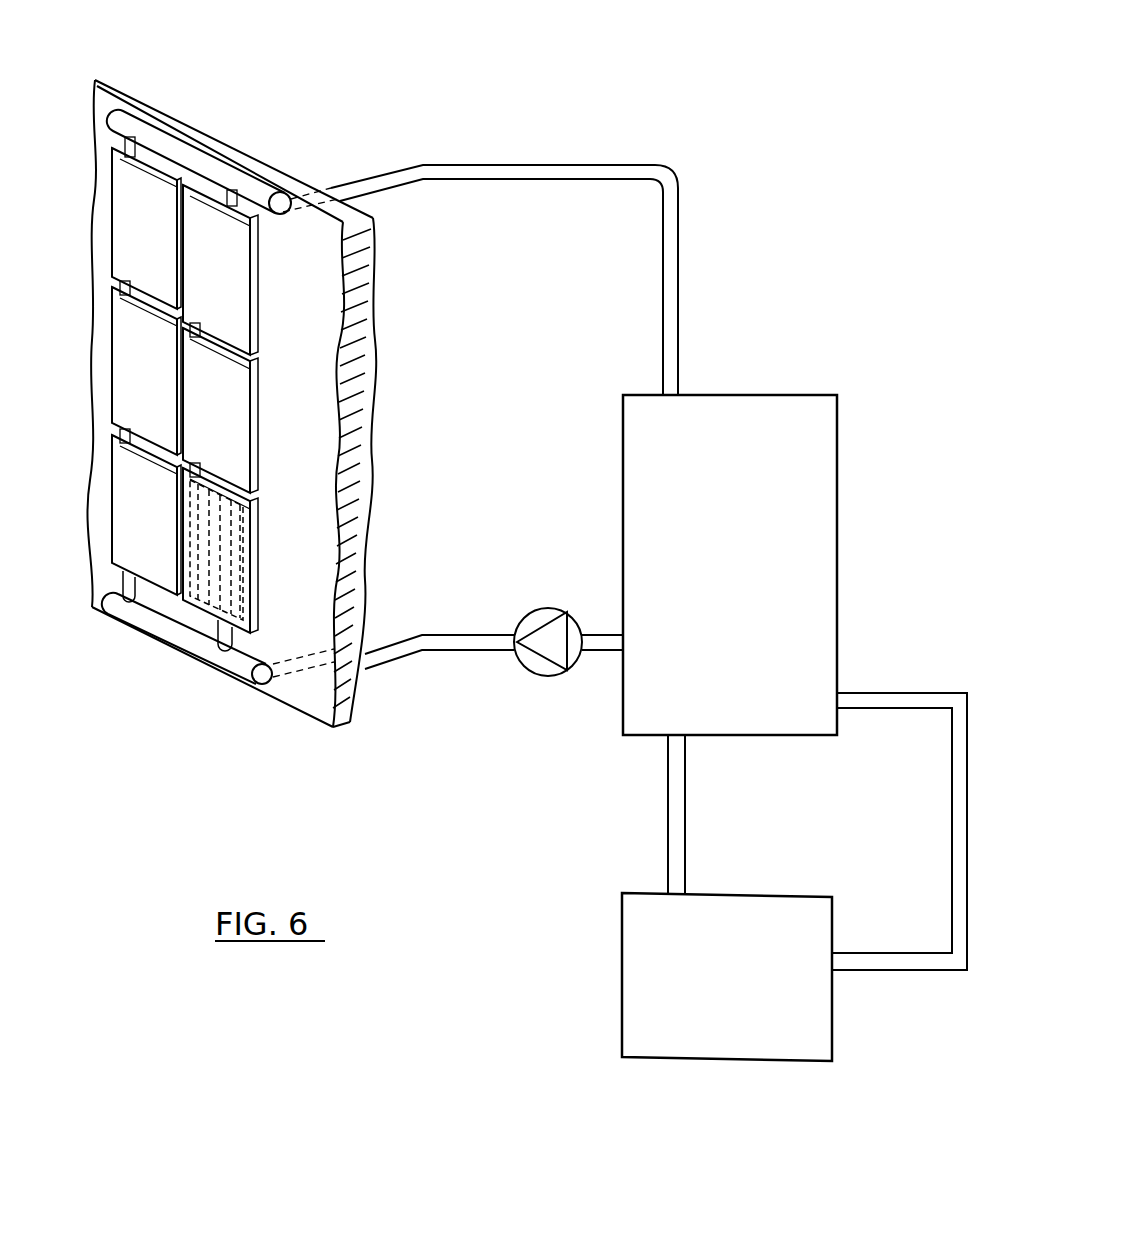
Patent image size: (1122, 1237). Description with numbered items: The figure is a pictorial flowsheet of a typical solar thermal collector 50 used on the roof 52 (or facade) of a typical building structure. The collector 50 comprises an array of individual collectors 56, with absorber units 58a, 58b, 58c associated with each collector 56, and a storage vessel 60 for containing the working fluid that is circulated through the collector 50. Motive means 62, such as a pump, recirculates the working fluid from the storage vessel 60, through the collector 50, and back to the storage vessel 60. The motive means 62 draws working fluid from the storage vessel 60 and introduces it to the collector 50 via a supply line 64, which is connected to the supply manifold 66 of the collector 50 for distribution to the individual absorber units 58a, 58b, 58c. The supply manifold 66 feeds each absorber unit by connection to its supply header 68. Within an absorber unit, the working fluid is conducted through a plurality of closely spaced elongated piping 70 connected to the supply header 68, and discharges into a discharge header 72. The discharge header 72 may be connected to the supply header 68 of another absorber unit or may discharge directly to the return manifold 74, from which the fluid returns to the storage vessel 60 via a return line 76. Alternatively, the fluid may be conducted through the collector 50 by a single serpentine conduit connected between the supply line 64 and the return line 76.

The solar thermal collector 50 is at (250, 70).
The roof 52 is at (362, 527).
The collector 56 is at (130, 546).
The absorber unit 58a is at (164, 528).
The absorber unit 58b is at (163, 380).
The absorber unit 58c is at (166, 243).
The storage vessel 60 is at (768, 415).
The motive means 62 is at (535, 662).
The supply line 64 is at (428, 638).
The supply manifold 66 is at (202, 648).
The supply header 68 is at (208, 607).
The elongated piping 70 is at (236, 565).
The discharge header 72 is at (252, 505).
The return manifold 74 is at (235, 178).
The return line 76 is at (496, 168).